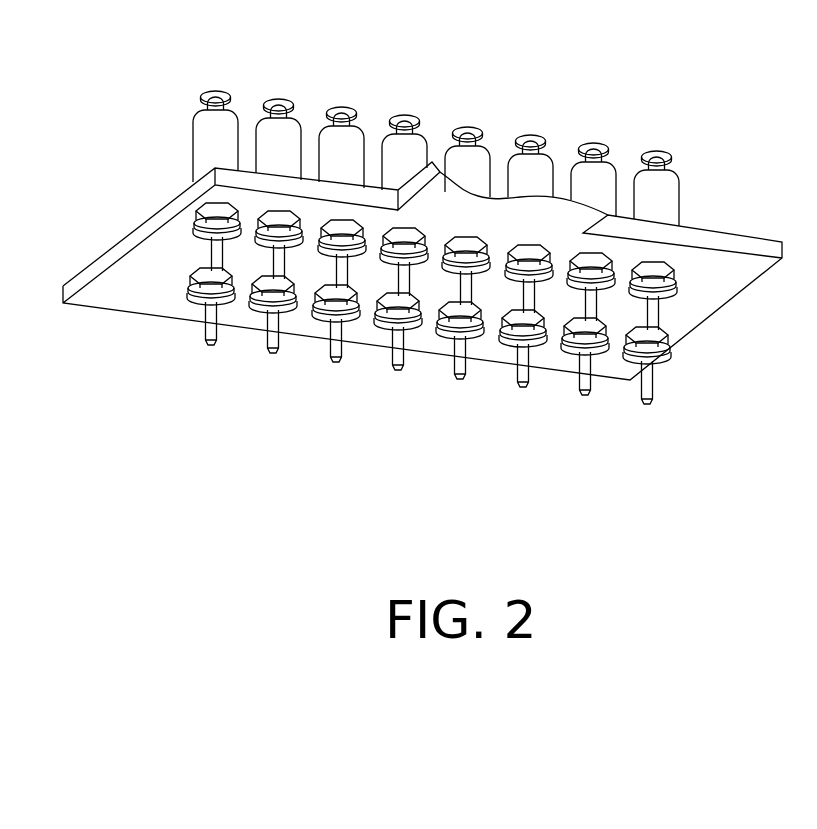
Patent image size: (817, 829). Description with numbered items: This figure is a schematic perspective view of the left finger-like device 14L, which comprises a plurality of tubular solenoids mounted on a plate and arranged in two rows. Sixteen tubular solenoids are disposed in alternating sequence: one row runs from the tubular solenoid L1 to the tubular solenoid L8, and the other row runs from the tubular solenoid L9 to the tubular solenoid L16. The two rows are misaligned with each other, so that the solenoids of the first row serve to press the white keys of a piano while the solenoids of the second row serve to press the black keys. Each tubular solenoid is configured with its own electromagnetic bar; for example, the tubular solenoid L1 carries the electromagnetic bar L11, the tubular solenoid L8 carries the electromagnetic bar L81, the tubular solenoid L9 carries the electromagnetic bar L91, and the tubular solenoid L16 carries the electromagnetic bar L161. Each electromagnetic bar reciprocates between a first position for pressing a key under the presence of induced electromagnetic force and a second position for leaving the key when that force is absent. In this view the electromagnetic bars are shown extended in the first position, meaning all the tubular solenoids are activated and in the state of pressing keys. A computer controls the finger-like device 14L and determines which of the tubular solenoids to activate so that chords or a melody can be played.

The left finger-like device 14L is at (694, 114).
The tubular solenoid L1 is at (193, 143).
The tubular solenoid L8 is at (663, 198).
The electromagnetic bar L11 is at (210, 253).
The tubular solenoid L9 is at (205, 294).
The electromagnetic bar L91 is at (214, 346).
The electromagnetic bar L81 is at (653, 310).
The tubular solenoid L16 is at (658, 355).
The electromagnetic bar L161 is at (647, 405).